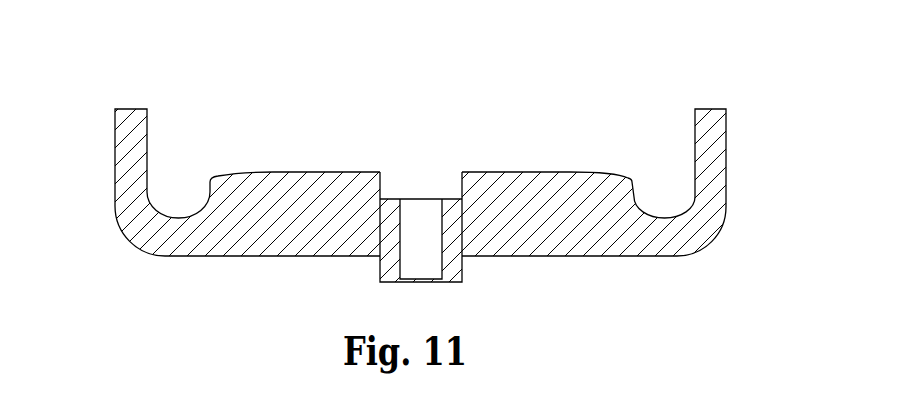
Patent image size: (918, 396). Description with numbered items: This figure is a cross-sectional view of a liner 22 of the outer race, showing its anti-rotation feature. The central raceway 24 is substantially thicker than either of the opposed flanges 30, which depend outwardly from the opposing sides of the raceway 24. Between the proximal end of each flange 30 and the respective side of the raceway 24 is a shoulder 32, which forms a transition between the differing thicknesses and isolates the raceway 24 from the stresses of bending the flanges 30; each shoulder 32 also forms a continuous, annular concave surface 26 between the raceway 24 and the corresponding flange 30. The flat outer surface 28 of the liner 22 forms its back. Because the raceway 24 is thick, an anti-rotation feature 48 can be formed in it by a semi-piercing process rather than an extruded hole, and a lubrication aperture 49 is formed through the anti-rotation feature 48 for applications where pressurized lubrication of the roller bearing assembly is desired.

The liner 22 is at (236, 111).
The raceway 24 is at (301, 170).
The annular concave surface 26 is at (663, 214).
The outer surface 28 is at (208, 258).
The flange 30 is at (113, 156).
The shoulder 32 is at (634, 209).
The anti-rotation feature 48 is at (463, 272).
The lubrication aperture 49 is at (440, 224).